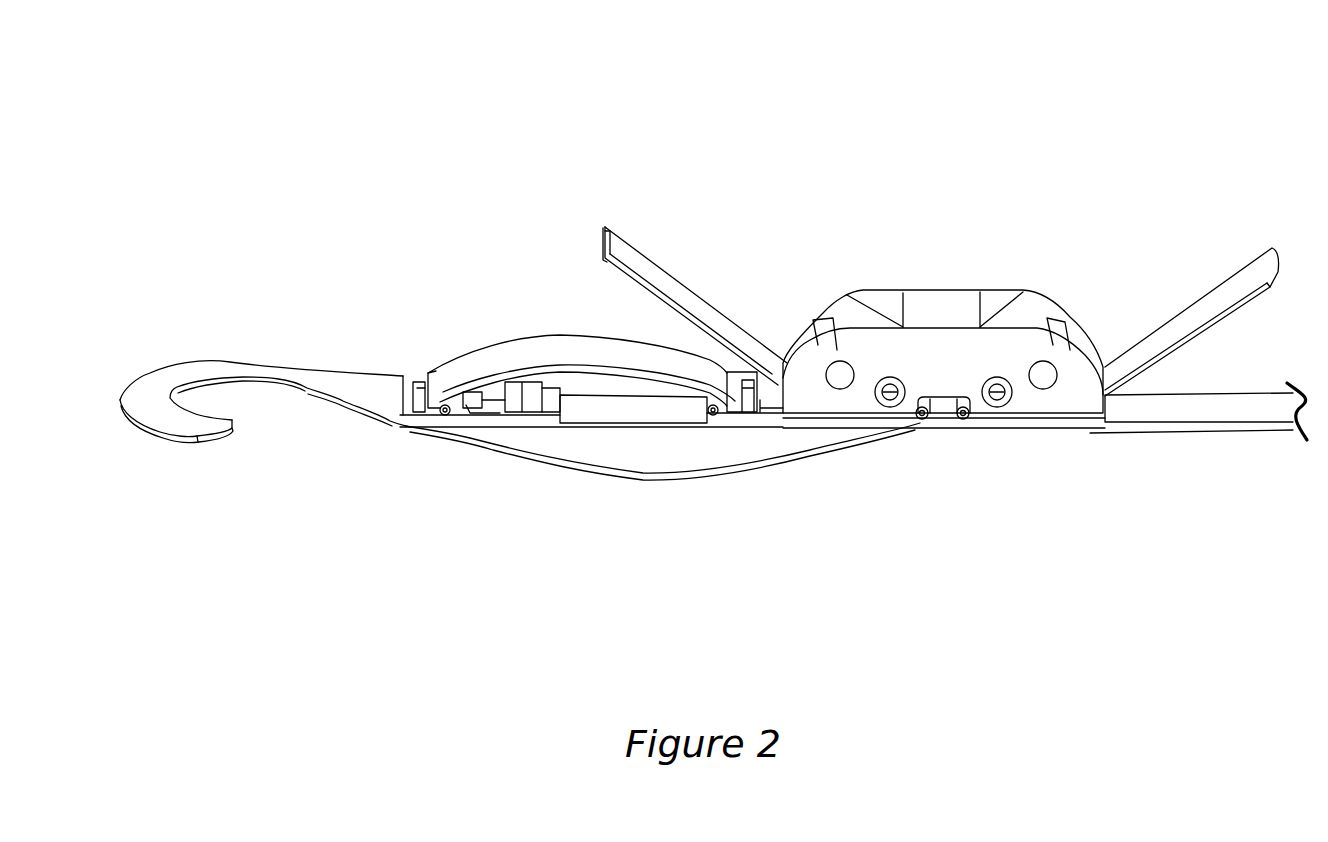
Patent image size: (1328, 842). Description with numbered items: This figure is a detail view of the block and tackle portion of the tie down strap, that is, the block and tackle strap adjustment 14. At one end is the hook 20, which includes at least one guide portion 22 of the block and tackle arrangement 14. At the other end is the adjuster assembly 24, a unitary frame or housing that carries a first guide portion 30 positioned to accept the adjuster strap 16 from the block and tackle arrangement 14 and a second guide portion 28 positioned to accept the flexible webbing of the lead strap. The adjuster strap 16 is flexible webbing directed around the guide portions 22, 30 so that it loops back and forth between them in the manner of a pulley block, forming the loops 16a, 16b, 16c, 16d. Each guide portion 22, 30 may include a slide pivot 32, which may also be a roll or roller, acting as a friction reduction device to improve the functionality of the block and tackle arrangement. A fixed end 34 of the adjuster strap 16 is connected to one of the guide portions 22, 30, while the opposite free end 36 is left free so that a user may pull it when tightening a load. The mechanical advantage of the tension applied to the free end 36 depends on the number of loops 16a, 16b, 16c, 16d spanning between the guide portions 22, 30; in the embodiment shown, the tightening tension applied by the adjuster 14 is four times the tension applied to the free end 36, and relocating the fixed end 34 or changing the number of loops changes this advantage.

The block and tackle strap adjustment 14 is at (565, 145).
The adjuster strap 16 is at (512, 362).
The loop 16a is at (727, 333).
The loop 16b is at (645, 455).
The loop 16c is at (566, 338).
The loop 16d is at (592, 415).
The hook 20 is at (160, 382).
The first guide portion 22 is at (398, 377).
The adjuster assembly 24 is at (925, 246).
The second guide portion 28 is at (947, 423).
The first guide portion 30 is at (768, 405).
The slide pivot 32 is at (442, 415).
The fixed end 34 is at (518, 405).
The free end 36 is at (648, 270).